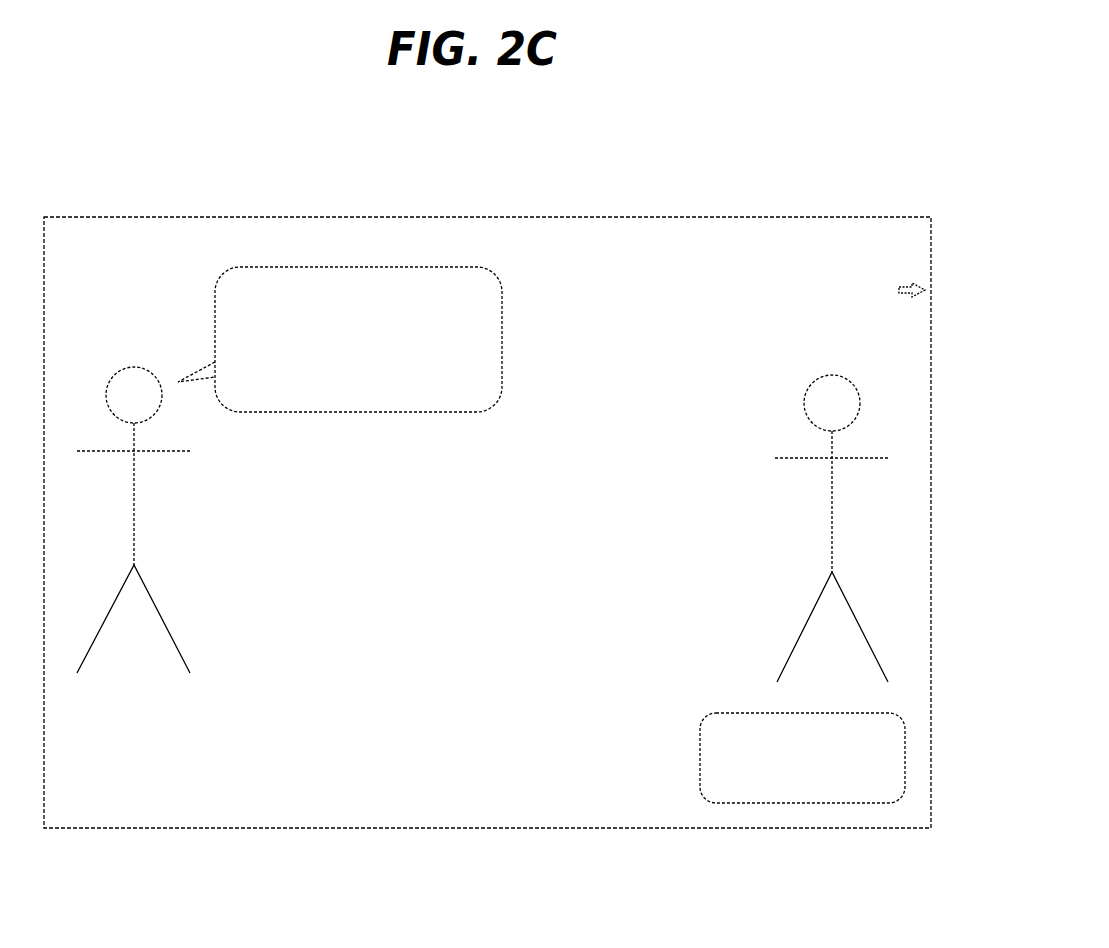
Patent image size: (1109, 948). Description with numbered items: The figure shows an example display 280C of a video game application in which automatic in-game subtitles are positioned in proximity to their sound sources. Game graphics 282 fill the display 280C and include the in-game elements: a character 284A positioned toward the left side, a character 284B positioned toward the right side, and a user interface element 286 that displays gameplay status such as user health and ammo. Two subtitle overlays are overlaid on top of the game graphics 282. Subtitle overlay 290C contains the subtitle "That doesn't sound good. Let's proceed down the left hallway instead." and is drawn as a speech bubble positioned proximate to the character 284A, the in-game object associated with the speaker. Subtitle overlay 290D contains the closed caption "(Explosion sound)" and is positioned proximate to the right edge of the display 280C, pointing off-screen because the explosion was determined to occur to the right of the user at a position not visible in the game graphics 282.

The display 280C is at (498, 423).
The game graphics 282 is at (487, 522).
The character 284A is at (257, 615).
The character 284B is at (788, 623).
The user interface element 286 is at (803, 807).
The subtitle overlay 290C is at (253, 265).
The subtitle overlay 290D is at (840, 182).